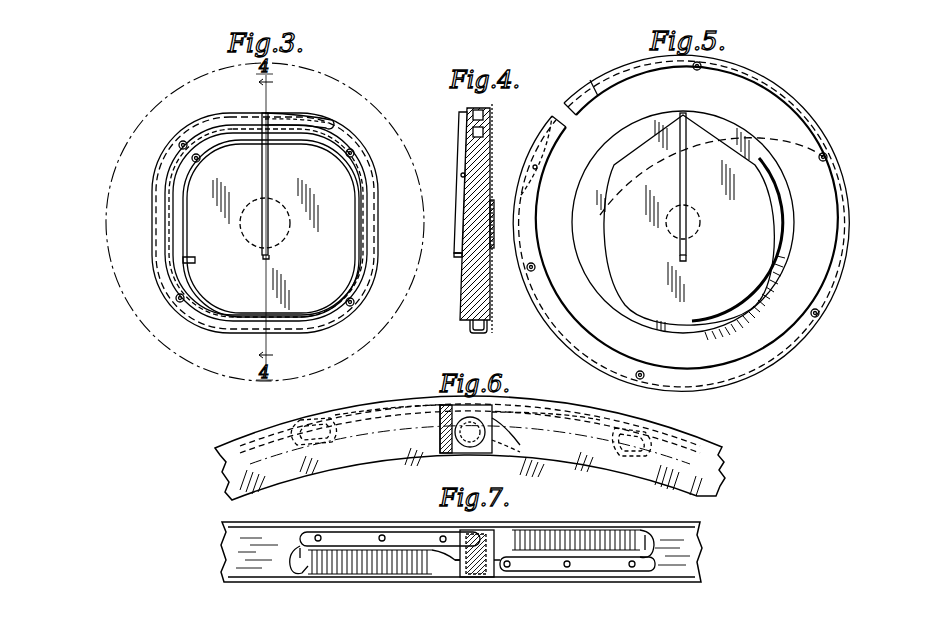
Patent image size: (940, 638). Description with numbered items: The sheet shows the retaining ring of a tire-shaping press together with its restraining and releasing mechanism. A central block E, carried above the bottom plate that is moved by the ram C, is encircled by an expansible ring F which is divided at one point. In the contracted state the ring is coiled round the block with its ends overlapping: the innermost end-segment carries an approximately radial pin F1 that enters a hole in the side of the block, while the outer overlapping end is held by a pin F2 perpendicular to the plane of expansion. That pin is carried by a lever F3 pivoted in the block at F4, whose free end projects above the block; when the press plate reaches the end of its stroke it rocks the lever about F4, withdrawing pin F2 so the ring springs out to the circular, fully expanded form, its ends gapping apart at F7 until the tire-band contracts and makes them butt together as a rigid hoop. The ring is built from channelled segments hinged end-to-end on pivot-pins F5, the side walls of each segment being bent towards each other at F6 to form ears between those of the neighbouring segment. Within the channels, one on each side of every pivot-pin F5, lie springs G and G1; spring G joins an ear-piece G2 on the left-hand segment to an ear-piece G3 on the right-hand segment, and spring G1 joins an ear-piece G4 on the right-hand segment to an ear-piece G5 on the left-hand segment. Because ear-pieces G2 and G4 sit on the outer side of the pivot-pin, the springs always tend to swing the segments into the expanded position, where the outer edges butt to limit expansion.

In FIG. 3, the expansible ring F is at (228, 338).
In FIG. 4, the expansible ring F is at (490, 102).
In FIG. 5, the expansible ring F is at (813, 131).
In FIG. 6, the expansible ring F is at (695, 456).
In FIG. 7, the expansible ring F is at (461, 552).
In FIG. 3, the radial pin F1 is at (183, 260).
In FIG. 5, the radial pin F1 is at (597, 88).
In FIG. 3, the pin F2 is at (270, 113).
In FIG. 4, the pin F2 is at (469, 110).
In FIG. 5, the pin F2 is at (686, 113).
In FIG. 3, the lever F3 is at (235, 152).
In FIG. 4, the lever F3 is at (461, 126).
In FIG. 5, the lever F3 is at (690, 137).
In FIG. 3, the pivot F4 is at (183, 137).
In FIG. 4, the pivot F4 is at (461, 175).
In FIG. 5, the pivot F4 is at (829, 152).
In FIG. 3, the pivot-pin F5 is at (180, 298).
In FIG. 5, the pivot-pin F5 is at (535, 267).
In FIG. 6, the pivot-pin F5 is at (468, 436).
In FIG. 7, the pivot-pin F5 is at (478, 583).
In FIG. 6, the bent side walls F6 is at (493, 446).
In FIG. 7, the bent side walls F6 is at (492, 578).
In FIG. 5, the gap F7 is at (553, 122).
In FIG. 6, the spring G is at (583, 430).
In FIG. 7, the spring G is at (597, 530).
In FIG. 6, the spring G1 is at (375, 418).
In FIG. 7, the spring G1 is at (362, 550).
In FIG. 6, the ear-piece G2 is at (508, 412).
In FIG. 7, the ear-piece G2 is at (500, 540).
In FIG. 6, the ear-piece G3 is at (640, 430).
In FIG. 7, the ear-piece G3 is at (644, 530).
In FIG. 6, the ear-piece G4 is at (445, 410).
In FIG. 7, the ear-piece G4 is at (447, 550).
In FIG. 6, the ear-piece G5 is at (304, 430).
In FIG. 7, the ear-piece G5 is at (302, 543).
In FIG. 3, the central block E is at (271, 228).
In FIG. 4, the central block E is at (461, 287).
In FIG. 5, the central block E is at (683, 222).
In FIG. 3, the ram C is at (287, 228).
In FIG. 4, the ram C is at (494, 248).
In FIG. 5, the ram C is at (690, 212).